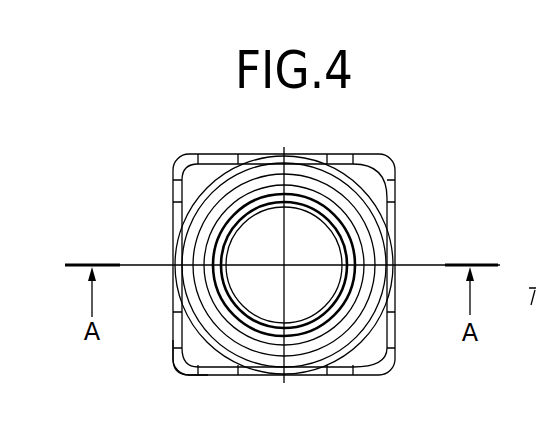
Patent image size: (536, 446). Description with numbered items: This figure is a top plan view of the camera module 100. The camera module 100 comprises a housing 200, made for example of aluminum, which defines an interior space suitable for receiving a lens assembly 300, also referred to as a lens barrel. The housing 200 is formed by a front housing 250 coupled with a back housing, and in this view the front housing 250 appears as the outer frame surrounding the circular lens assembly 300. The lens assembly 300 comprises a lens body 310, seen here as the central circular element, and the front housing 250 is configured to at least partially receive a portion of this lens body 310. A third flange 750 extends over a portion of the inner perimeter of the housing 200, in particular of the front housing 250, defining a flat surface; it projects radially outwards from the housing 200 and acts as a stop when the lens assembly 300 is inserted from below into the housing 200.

The camera module 100 is at (270, 248).
The housing 200 is at (387, 161).
The front housing 250 is at (389, 207).
The lens assembly 300 is at (226, 238).
The lens body 310 is at (232, 253).
The third flange 750 is at (182, 366).